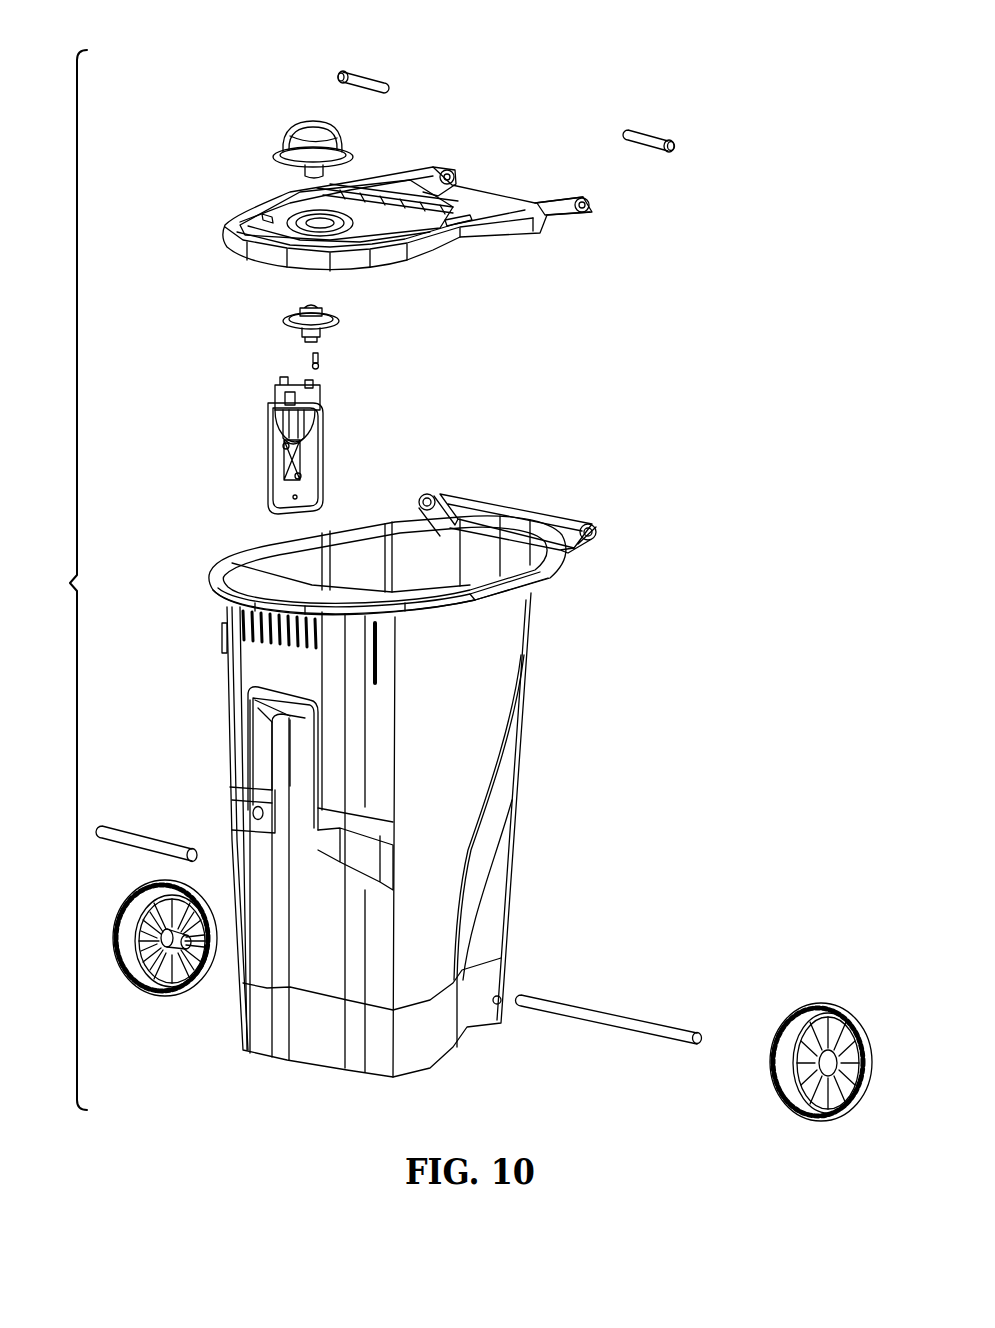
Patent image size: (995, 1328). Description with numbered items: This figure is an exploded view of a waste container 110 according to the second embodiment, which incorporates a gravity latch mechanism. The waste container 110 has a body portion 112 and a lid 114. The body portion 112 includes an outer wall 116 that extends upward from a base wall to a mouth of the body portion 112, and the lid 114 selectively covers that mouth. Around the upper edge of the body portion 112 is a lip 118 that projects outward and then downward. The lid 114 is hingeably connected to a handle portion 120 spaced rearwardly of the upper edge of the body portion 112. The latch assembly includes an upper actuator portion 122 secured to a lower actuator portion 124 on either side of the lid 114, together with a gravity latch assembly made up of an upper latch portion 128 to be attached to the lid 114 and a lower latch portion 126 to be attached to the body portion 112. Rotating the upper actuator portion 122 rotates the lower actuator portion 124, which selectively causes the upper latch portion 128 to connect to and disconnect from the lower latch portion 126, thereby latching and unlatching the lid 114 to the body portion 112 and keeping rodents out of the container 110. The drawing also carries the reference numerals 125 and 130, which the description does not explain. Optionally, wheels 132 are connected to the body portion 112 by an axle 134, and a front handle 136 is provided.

The waste container 110 is at (57, 580).
The body portion 112 is at (417, 754).
The lid 114 is at (536, 254).
The outer wall 116 is at (443, 803).
The lip 118 is at (460, 607).
The handle portion 120 is at (503, 507).
The upper actuator portion 122 is at (350, 133).
The lower actuator portion 124 is at (343, 307).
The pin 125 is at (323, 362).
The lower latch portion 126 is at (330, 444).
The upper latch portion 128 is at (323, 398).
The hinge pin 130 is at (368, 70).
The wheels 132 is at (115, 925).
The axle 134 is at (615, 1002).
The front handle 136 is at (152, 830).